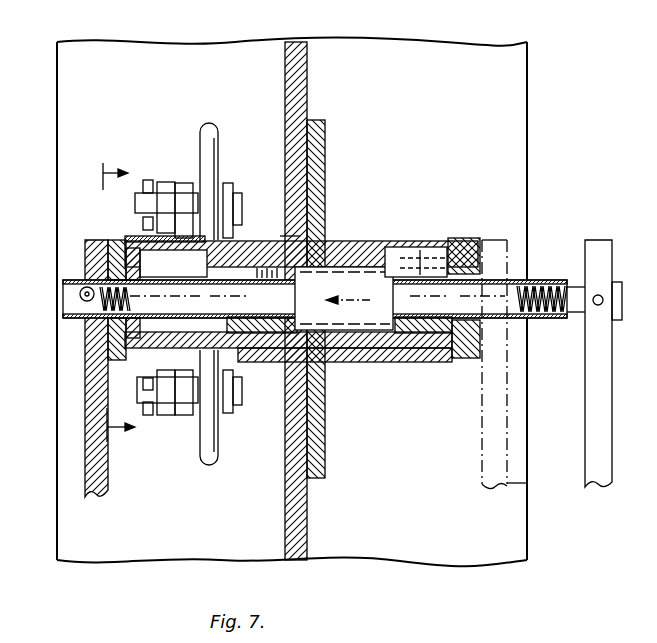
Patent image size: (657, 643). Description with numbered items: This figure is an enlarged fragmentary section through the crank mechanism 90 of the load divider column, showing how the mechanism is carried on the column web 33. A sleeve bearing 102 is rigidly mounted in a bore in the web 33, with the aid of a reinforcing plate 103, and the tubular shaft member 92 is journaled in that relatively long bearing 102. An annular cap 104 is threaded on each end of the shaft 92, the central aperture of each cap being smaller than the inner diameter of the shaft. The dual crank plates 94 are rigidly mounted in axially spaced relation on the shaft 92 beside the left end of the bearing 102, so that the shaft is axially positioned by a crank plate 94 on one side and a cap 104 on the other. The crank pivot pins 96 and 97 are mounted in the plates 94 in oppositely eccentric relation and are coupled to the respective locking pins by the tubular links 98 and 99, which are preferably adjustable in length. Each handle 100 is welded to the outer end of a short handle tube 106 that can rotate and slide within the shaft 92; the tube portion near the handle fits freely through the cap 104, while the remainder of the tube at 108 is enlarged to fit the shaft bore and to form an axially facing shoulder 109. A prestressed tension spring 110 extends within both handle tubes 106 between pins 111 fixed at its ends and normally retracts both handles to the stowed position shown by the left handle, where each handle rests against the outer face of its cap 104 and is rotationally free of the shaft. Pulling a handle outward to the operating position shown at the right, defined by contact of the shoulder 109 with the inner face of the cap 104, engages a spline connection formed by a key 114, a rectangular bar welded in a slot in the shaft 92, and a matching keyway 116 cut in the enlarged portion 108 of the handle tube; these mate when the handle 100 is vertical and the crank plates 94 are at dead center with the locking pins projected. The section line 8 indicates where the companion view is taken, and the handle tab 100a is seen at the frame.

The section line 8- 8 is at (105, 313).
The web 33 is at (307, 98).
The crank mechanism 90 is at (168, 105).
The tubular shaft member 92 is at (378, 241).
The dual crank plates 94 is at (185, 185).
The crank pivot pin 96 is at (164, 186).
The crank pivot pin 97 is at (168, 418).
The tubular link 98 is at (215, 128).
The tubular link 99 is at (208, 466).
The handle 100 is at (108, 490).
The frame plate tab 100a is at (512, 484).
The sleeve bearing 102 is at (338, 240).
The reinforcing plate 103 is at (325, 142).
The annular cap 104 is at (465, 240).
The handle tube 106 is at (126, 241).
The enlarged portion 108 is at (270, 362).
The shoulder 109 is at (480, 370).
The tension spring 110 is at (545, 283).
The pin 111 is at (95, 241).
The key 114 is at (415, 258).
The keyway 116 is at (290, 240).